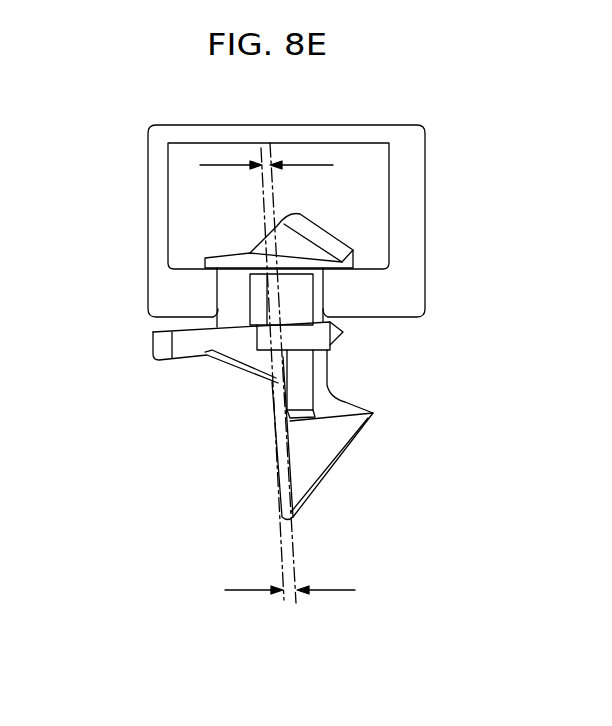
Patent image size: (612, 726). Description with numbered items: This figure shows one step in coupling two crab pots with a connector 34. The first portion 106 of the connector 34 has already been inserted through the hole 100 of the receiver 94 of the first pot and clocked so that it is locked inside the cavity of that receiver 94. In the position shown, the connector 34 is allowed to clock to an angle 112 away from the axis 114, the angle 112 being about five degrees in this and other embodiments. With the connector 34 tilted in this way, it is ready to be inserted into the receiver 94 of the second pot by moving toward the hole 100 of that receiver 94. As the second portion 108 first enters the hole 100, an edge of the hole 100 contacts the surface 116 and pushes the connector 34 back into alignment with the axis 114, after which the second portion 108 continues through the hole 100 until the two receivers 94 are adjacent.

The receiver 94 is at (373, 125).
The first portion 106 is at (100, 223).
The second portion 108 is at (231, 435).
The hole 100 is at (327, 297).
The connector 34 is at (342, 462).
The surface 116 is at (322, 488).
The angle 112 is at (262, 167).
The axis 114 is at (262, 193).